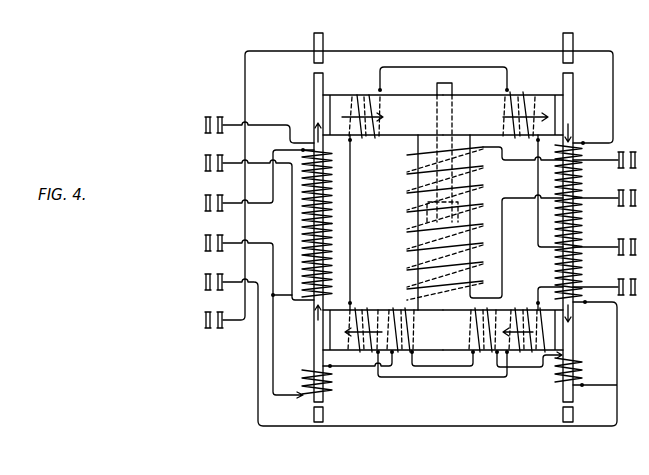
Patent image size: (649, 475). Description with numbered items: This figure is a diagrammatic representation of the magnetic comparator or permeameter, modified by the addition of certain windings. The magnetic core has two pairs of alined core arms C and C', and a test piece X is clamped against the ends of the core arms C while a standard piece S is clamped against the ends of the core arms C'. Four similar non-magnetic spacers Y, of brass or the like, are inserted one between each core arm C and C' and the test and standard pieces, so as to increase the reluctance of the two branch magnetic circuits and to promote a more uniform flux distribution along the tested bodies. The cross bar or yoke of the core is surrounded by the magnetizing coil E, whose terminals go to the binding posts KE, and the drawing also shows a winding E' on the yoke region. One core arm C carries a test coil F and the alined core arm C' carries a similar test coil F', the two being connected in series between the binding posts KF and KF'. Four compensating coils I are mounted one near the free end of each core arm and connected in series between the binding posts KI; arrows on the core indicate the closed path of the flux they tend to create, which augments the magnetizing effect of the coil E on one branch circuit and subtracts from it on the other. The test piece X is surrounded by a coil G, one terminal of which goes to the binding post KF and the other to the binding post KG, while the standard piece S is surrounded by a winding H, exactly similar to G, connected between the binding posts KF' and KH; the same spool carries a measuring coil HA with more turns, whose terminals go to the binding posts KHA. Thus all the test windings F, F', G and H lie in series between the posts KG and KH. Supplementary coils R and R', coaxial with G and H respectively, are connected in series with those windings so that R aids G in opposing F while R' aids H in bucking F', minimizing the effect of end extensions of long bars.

The standard piece S is at (312, 103).
The non-magnetic spacer Y is at (312, 118).
The test piece X is at (573, 338).
The core arm C' is at (383, 222).
The core arm C is at (503, 222).
The compensating coil I is at (362, 95).
The test coil F' is at (411, 330).
The test coil F is at (474, 330).
The armature winding E' is at (426, 188).
The magnetizing coil E is at (423, 249).
The measuring coil HA is at (345, 240).
The winding H is at (335, 266).
The supplementary coil R' is at (327, 392).
The coil G is at (580, 226).
The supplementary coil R is at (577, 370).
The binding posts KHA is at (205, 163).
The binding post KH is at (205, 205).
The binding post KF' is at (228, 316).
The binding post KF is at (382, 350).
The binding post KG is at (205, 320).
The binding posts KE is at (622, 190).
The binding posts KI is at (622, 258).